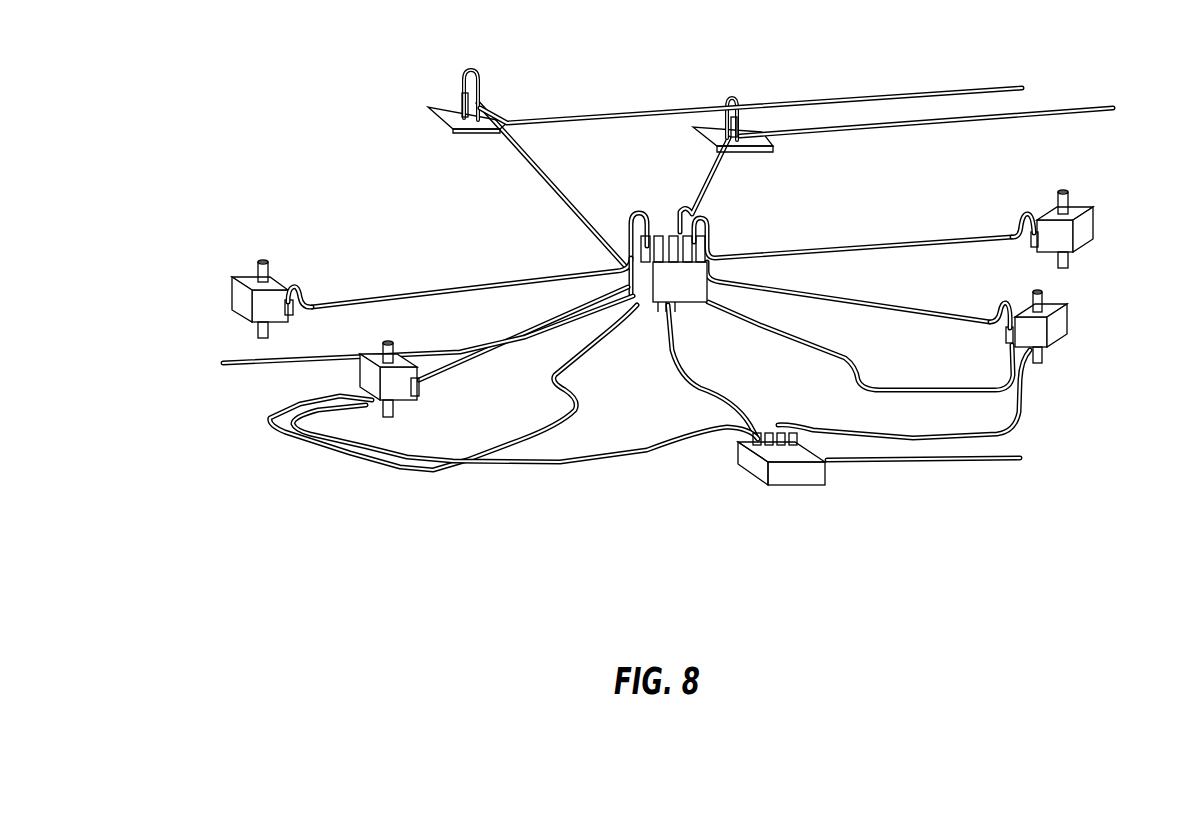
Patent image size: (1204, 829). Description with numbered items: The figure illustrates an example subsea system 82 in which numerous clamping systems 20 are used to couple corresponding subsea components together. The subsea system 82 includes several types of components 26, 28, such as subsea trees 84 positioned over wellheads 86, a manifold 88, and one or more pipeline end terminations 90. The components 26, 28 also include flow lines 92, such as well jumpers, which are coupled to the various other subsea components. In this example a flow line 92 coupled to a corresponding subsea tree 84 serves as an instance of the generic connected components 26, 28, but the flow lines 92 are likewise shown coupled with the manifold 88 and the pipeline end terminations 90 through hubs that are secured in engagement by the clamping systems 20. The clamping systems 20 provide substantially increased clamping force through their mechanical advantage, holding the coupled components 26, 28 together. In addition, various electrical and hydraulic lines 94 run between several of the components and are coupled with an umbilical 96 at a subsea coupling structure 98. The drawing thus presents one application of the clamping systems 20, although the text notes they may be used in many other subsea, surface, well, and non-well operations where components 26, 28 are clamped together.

The clamping system 20 is at (458, 98).
The component 26 is at (301, 315).
The component 28 is at (306, 277).
The subsea system 82 is at (921, 71).
The subsea tree 84 is at (221, 297).
The wellhead 86 is at (252, 334).
The manifold 88 is at (729, 232).
The pipeline end termination 90 is at (493, 72).
The flow line 92 is at (1030, 108).
The electrical and hydraulic line 94 is at (462, 445).
The umbilical 96 is at (867, 462).
The subsea coupling structure 98 is at (780, 487).